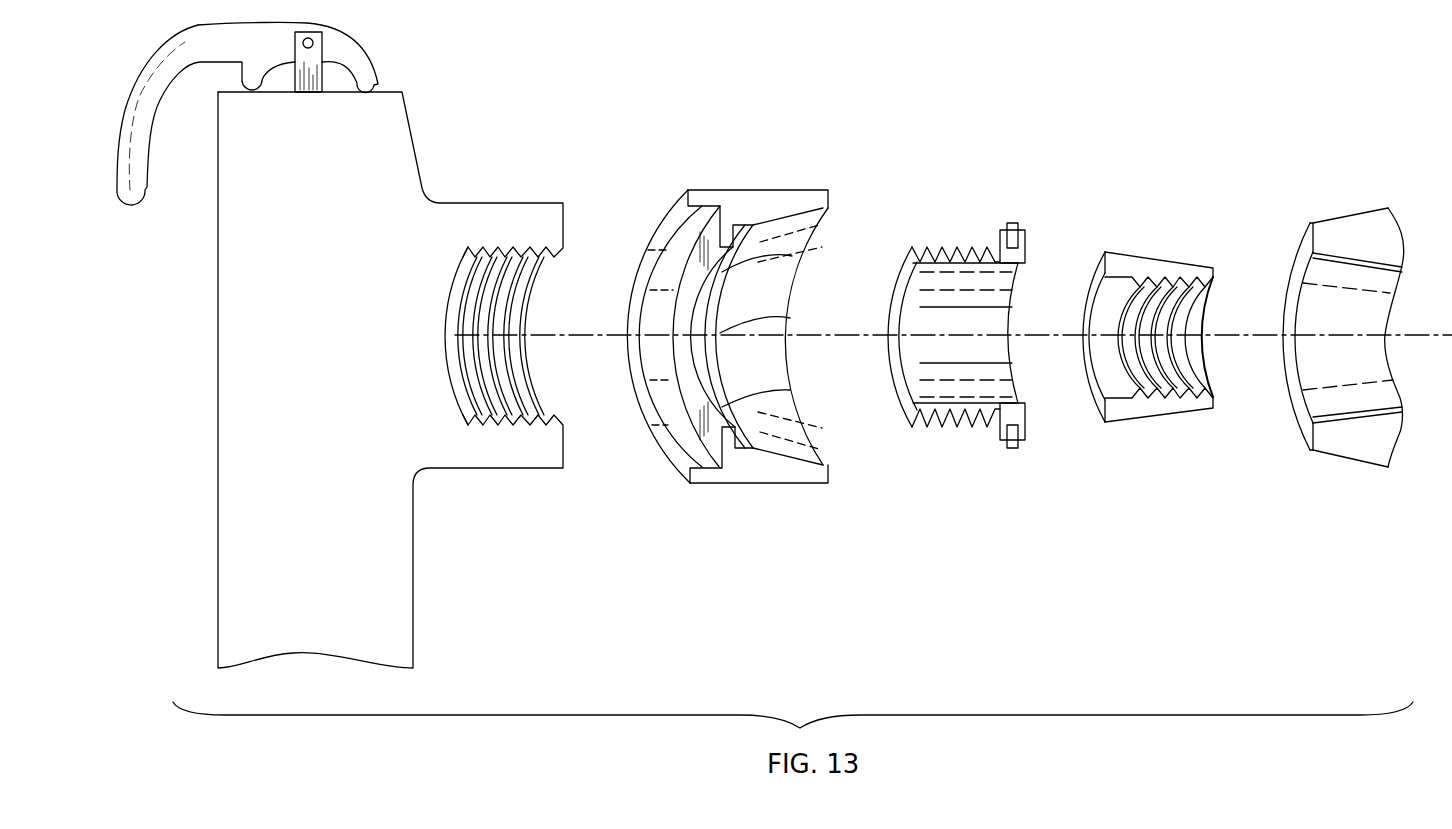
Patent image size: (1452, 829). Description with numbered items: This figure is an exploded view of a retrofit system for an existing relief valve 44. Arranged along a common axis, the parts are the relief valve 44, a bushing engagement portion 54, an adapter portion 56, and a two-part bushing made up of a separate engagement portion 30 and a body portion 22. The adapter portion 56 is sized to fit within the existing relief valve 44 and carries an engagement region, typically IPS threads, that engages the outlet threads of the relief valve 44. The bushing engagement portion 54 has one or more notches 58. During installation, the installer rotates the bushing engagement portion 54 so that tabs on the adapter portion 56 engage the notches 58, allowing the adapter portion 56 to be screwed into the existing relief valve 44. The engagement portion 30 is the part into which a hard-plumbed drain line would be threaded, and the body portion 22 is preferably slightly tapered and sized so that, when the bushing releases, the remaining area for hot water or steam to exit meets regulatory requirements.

The relief valve 44 is at (458, 203).
The bushing engagement portion 54 is at (738, 190).
The notches 58 is at (730, 273).
The adapter portion 56 is at (1027, 237).
The engagement portion 30 is at (1155, 257).
The body portion 22 is at (1332, 220).